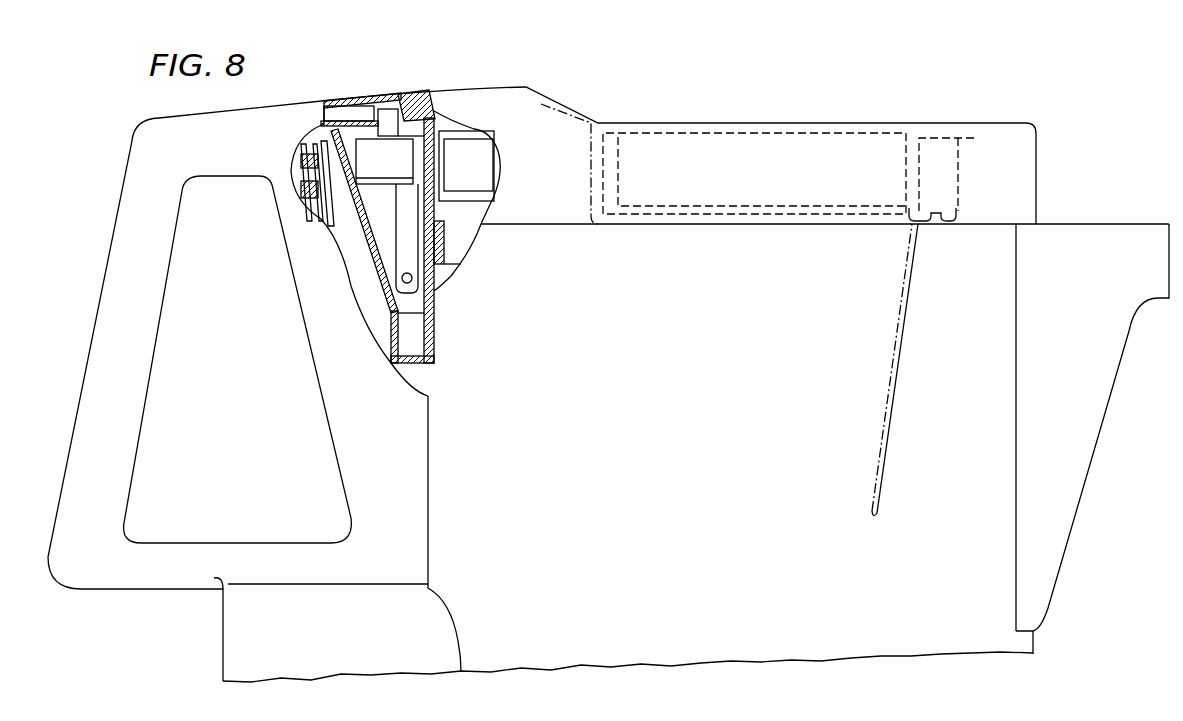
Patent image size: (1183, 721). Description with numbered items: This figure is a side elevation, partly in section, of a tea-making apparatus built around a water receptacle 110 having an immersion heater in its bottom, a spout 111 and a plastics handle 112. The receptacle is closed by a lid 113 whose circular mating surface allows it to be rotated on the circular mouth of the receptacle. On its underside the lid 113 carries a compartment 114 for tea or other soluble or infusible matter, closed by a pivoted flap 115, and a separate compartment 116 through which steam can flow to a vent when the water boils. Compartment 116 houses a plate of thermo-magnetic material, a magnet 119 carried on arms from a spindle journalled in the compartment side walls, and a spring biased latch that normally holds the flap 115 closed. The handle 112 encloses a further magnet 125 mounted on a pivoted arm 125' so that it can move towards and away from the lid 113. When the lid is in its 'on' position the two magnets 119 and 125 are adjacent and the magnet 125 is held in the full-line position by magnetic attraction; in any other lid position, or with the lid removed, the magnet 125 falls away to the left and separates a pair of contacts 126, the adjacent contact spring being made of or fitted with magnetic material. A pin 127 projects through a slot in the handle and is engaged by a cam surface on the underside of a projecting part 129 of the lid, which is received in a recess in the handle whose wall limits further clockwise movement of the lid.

The water receptacle 110 is at (663, 449).
The spout 111 is at (1093, 368).
The handle 112 is at (143, 330).
The lid 113 is at (728, 132).
The compartment 114 is at (852, 148).
The pivoted flap 115 is at (843, 217).
The compartment 116 is at (567, 164).
The magnet 119 is at (477, 175).
The further magnet 125 is at (384, 161).
The pivoted arm 125' is at (385, 238).
The pair of contacts 126 is at (302, 142).
The pin 127 is at (418, 110).
The projecting part 129 is at (358, 88).